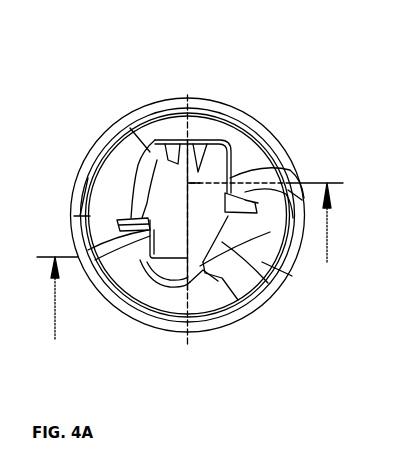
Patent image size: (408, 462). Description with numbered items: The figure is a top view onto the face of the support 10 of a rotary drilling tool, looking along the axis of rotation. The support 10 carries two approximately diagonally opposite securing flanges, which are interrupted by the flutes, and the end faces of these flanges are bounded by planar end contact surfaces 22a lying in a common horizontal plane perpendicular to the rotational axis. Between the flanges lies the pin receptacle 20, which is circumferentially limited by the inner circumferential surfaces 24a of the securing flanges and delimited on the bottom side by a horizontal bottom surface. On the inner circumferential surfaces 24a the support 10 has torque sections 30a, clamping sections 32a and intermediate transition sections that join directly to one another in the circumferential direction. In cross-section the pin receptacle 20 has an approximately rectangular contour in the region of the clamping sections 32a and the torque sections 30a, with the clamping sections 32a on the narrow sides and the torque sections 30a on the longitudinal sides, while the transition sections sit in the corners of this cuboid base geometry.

The support 10 is at (335, 73).
The pin receptacle 20 is at (180, 200).
The end contact surfaces 22a is at (209, 292).
The inner circumferential surfaces 24a is at (200, 148).
The torque sections 30a is at (236, 157).
The clamping sections 32a is at (178, 147).